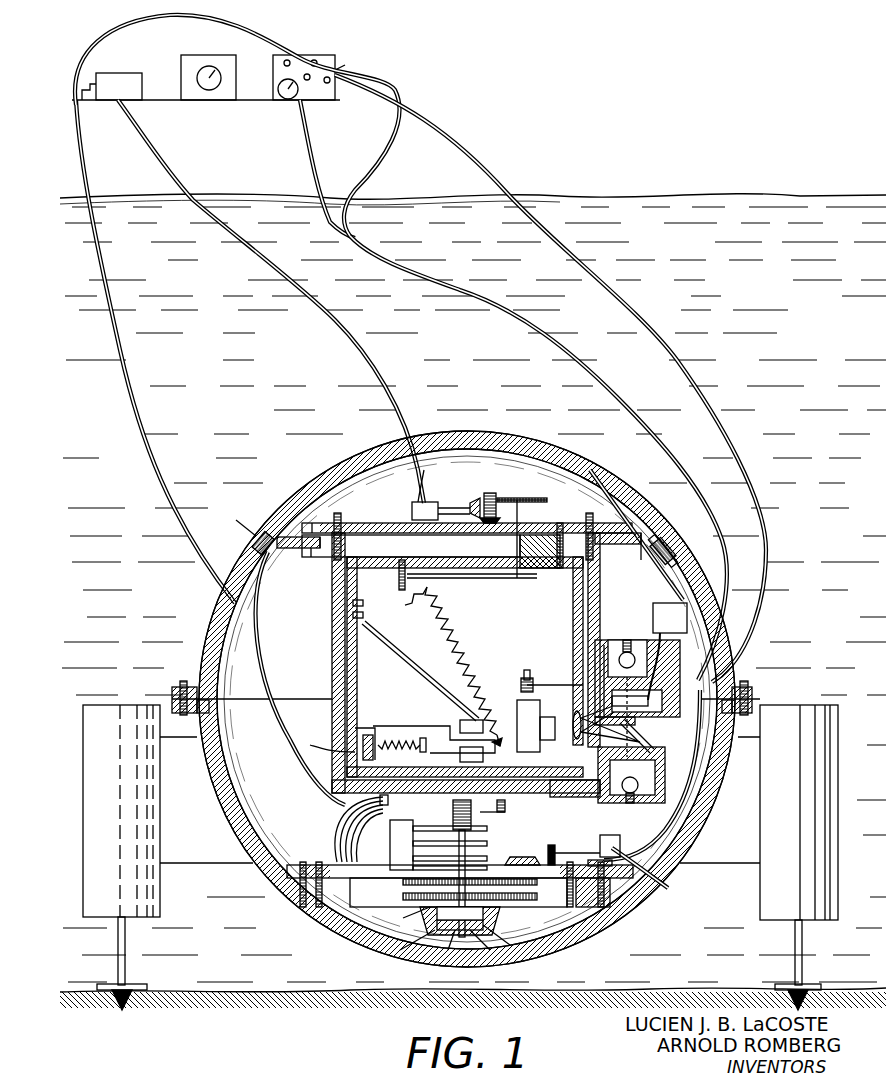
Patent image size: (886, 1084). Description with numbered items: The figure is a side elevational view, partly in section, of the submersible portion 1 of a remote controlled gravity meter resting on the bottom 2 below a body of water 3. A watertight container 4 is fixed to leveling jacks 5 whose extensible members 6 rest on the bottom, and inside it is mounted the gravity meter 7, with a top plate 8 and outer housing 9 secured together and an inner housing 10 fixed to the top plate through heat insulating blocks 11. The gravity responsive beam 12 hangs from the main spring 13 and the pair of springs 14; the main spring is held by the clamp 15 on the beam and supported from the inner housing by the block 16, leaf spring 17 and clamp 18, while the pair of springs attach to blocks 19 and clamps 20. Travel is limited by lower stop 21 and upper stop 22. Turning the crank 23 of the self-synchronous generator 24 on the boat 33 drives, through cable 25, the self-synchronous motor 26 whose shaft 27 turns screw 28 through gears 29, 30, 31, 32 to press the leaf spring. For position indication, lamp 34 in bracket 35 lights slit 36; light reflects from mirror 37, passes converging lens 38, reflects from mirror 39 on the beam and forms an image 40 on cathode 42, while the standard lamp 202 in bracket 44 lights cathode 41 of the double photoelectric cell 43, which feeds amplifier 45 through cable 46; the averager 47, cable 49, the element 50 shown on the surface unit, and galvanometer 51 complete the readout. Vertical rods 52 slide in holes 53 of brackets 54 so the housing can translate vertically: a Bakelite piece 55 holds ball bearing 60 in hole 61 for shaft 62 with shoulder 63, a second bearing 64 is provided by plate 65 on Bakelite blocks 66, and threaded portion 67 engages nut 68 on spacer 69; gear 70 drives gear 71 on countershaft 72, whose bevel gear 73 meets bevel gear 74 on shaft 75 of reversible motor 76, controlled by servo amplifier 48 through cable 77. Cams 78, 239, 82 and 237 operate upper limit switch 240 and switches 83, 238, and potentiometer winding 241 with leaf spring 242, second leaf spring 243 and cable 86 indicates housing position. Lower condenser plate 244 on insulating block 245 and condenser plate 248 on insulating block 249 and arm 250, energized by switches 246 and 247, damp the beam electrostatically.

The submersible portion 1 is at (566, 463).
The bottom 2 is at (622, 992).
The body of water 3 is at (675, 198).
The watertight container 4 is at (641, 499).
The leveling jacks 5 is at (126, 705).
The extensible members 6 is at (124, 948).
The gravity meter 7 is at (328, 606).
The top plate 8 is at (372, 523).
The outer housing 9 is at (332, 643).
The inner housing 10 is at (350, 672).
The heat insulating blocks 11 is at (338, 520).
The gravity responsive beam 12 is at (395, 726).
The main spring 13 is at (474, 662).
The springs 14 is at (368, 735).
The clamp 15 is at (500, 733).
The block 16 is at (398, 580).
The leaf spring 17 is at (468, 582).
The clamp 18 is at (408, 608).
The blocks 19 is at (402, 752).
The clamps 20 is at (481, 734).
The lower stop 21 is at (575, 798).
The upper stop 22 is at (527, 672).
The crank 23 is at (90, 102).
The self-synchronous generator 24 is at (138, 74).
The cable 25 is at (372, 345).
The self-synchronous motor 26 is at (414, 494).
The shaft 27 is at (455, 505).
The screw 28 is at (540, 550).
The gear 29 is at (478, 498).
The gear 30 is at (411, 545).
The gear 31 is at (496, 493).
The gear 32 is at (546, 500).
The boat 33 is at (393, 157).
The electric lamp 34 is at (672, 798).
The bracket 35 is at (680, 822).
The slit 36 is at (680, 778).
The mirror 37 is at (655, 748).
The converging lens 38 is at (574, 740).
The mirror 39 is at (556, 716).
The image 40 is at (572, 686).
The cathode 41 is at (637, 675).
The cathode 42 is at (648, 690).
The double photoelectric cell 43 is at (677, 724).
The bracket 44 is at (603, 642).
The amplifier 45 is at (652, 603).
The cable 46 is at (722, 679).
The averager 47 is at (236, 80).
The servo amplifier 48 is at (338, 68).
The cable 49 is at (252, 160).
The cable 50 is at (320, 165).
The galvanometer 51 is at (182, 80).
The vertical rods 52 is at (304, 554).
The holes 53 is at (278, 515).
The brackets 54 is at (252, 532).
The heat insulating piece 55 is at (548, 940).
The ball bearing 60 is at (512, 948).
The hole 61 is at (437, 926).
The shaft 62 is at (413, 957).
The shoulder 63 is at (488, 957).
The second bearing 64 is at (448, 958).
The plate 65 is at (310, 866).
The Bakelite blocks 66 is at (338, 888).
The threaded portion 67 is at (380, 800).
The nut 68 is at (505, 810).
The Bakelite spacer 69 is at (390, 806).
The gear 70 is at (398, 894).
The gear 71 is at (596, 884).
The countershaft 72 is at (536, 888).
The bevel gear 73 is at (528, 857).
The bevel gear 74 is at (552, 845).
The motor shaft 75 is at (604, 842).
The reversible electric motor 76 is at (650, 880).
The cable 77 is at (768, 512).
The cam 78 is at (338, 846).
The cam 82 is at (418, 828).
The switch 83 is at (330, 812).
The multiconductor cable 86 is at (165, 480).
The lamp 202 is at (627, 640).
The cam 237 is at (464, 827).
The switch 238 is at (330, 828).
The cam 239 is at (471, 857).
The upper limit switch 240 is at (350, 866).
The annular potentiometer winding 241 is at (500, 912).
The leaf spring 242 is at (470, 883).
The second leaf spring 243 is at (356, 944).
The lower condenser plate 244 is at (460, 757).
The insulating block 245 is at (530, 726).
The switch 246 is at (292, 55).
The switch 247 is at (345, 72).
The condenser plate 248 is at (460, 723).
The insulating block 249 is at (480, 693).
The arm 250 is at (428, 661).